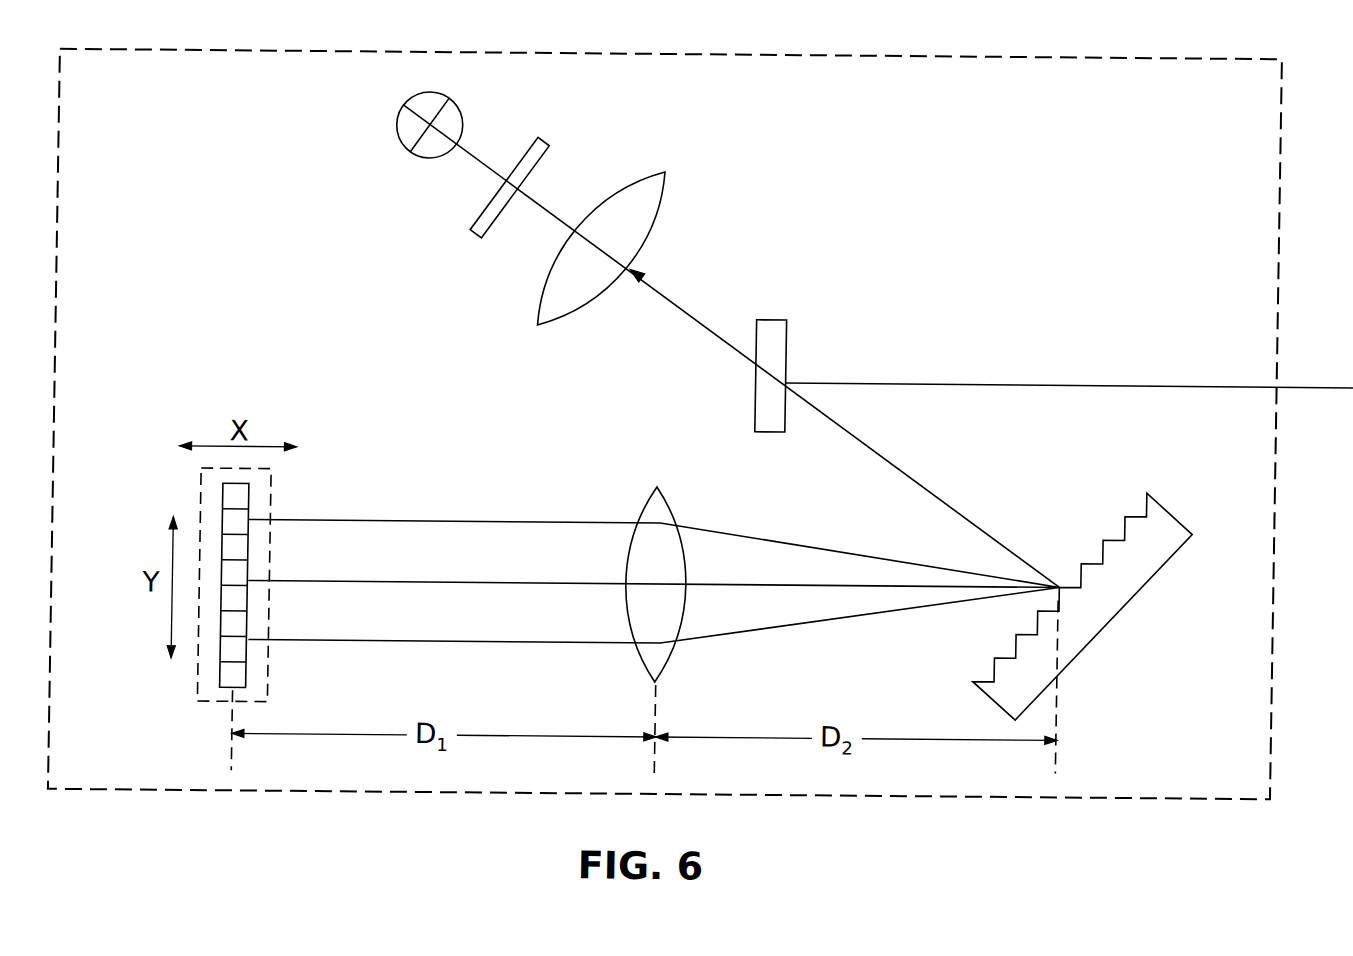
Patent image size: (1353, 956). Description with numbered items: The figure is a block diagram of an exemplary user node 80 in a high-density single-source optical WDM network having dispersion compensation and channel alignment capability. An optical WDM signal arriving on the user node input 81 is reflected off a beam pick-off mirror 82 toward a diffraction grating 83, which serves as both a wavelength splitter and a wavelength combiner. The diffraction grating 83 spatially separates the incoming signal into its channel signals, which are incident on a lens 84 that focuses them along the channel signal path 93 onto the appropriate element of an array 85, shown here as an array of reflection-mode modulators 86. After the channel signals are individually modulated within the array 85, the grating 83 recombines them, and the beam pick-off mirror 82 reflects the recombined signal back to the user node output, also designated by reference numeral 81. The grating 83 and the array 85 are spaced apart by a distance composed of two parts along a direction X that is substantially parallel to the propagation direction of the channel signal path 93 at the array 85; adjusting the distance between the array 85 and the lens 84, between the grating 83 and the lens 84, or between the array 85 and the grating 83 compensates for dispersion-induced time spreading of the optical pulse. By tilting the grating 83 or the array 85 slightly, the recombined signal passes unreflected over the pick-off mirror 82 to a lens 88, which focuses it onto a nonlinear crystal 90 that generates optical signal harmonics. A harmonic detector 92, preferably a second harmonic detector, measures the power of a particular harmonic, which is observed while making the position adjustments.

The user node 80 is at (216, 53).
The user node input 81 is at (1032, 380).
The beam pick-off mirror 82 is at (757, 404).
The diffraction grating 83 is at (1100, 631).
The lens 84 is at (628, 577).
The array 85 is at (269, 503).
The reflection-mode modulator 86 is at (252, 657).
The lens 88 is at (538, 313).
The nonlinear crystal 90 is at (470, 225).
The harmonic detector 92 is at (395, 127).
The channel signal path 93 is at (420, 584).